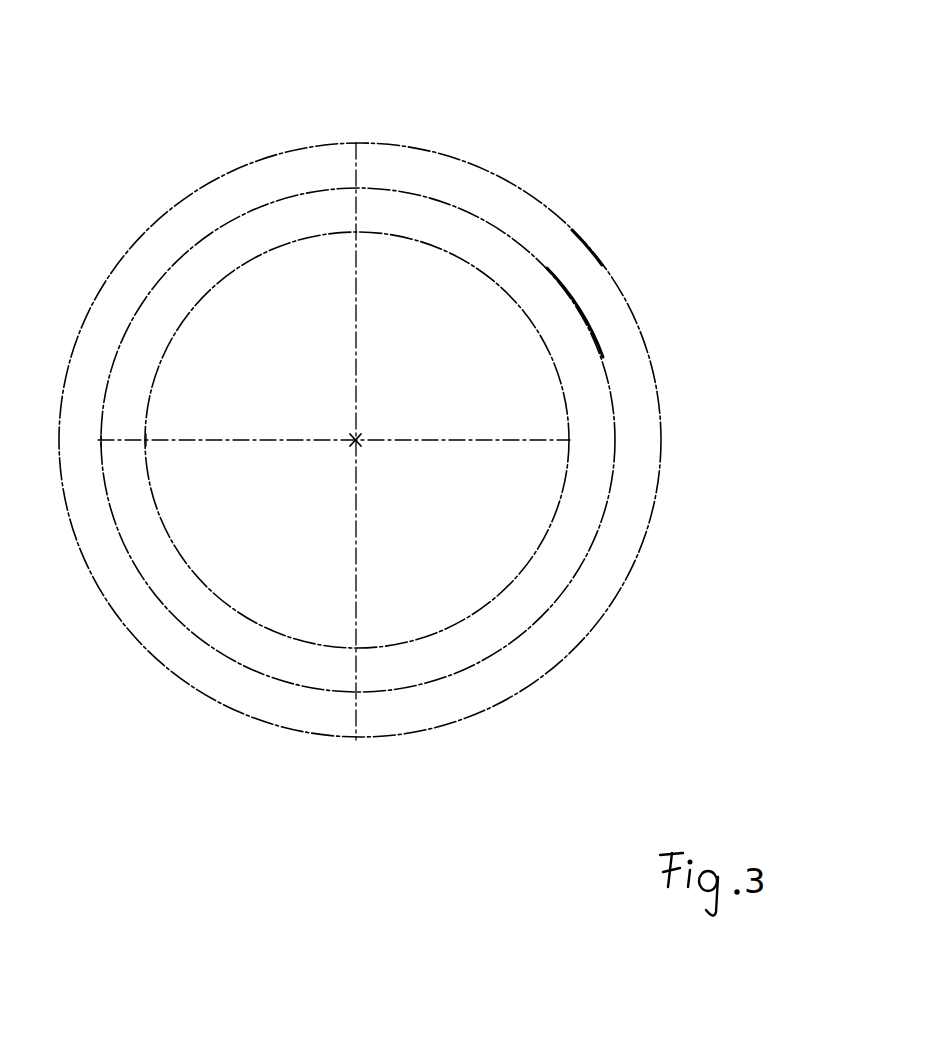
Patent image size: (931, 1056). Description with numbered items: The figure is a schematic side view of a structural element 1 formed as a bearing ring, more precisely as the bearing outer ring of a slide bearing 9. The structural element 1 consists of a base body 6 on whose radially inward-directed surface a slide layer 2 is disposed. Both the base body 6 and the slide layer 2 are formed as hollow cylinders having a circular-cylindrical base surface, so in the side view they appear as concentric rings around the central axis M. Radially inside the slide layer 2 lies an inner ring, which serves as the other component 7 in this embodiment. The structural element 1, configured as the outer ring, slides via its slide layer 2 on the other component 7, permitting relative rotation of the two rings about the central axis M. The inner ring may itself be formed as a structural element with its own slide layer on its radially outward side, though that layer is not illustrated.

The slide bearing 9 is at (427, 112).
The slide layer 2 is at (428, 198).
The structural element 1 is at (515, 217).
The base body 6 is at (568, 267).
The other component 7 is at (552, 335).
The central axis M is at (358, 442).